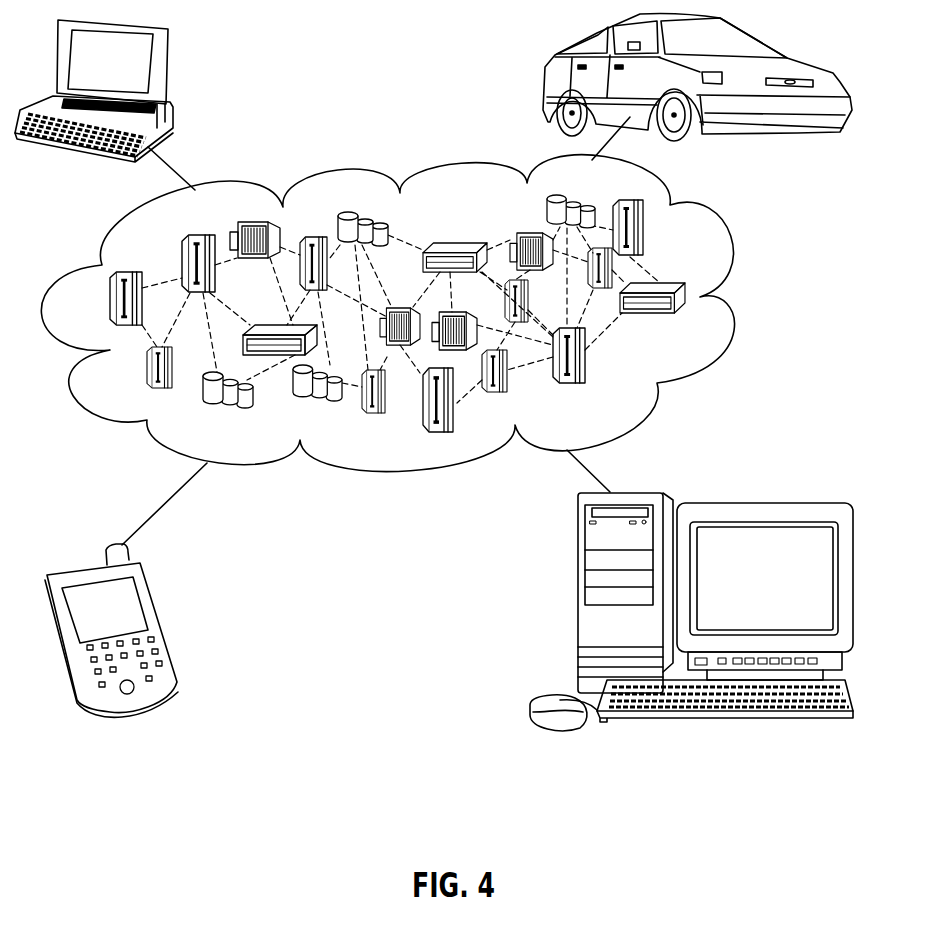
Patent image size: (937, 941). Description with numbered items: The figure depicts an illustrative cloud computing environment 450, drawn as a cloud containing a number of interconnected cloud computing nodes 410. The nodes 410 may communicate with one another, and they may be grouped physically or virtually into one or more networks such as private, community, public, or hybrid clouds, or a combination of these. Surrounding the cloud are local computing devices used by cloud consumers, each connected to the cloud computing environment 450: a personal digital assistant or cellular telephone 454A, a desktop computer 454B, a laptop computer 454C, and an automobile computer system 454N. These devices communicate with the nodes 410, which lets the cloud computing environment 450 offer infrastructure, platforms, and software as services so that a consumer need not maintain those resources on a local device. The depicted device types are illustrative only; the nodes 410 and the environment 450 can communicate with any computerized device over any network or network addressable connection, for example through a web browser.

The cloud computing nodes 410 is at (718, 322).
The cloud computing environment 450 is at (730, 260).
The personal digital assistant (PDA) or cellular telephone 454A is at (157, 620).
The desktop computer 454B is at (577, 600).
The laptop computer 454C is at (167, 65).
The automobile computer system 454N is at (547, 70).